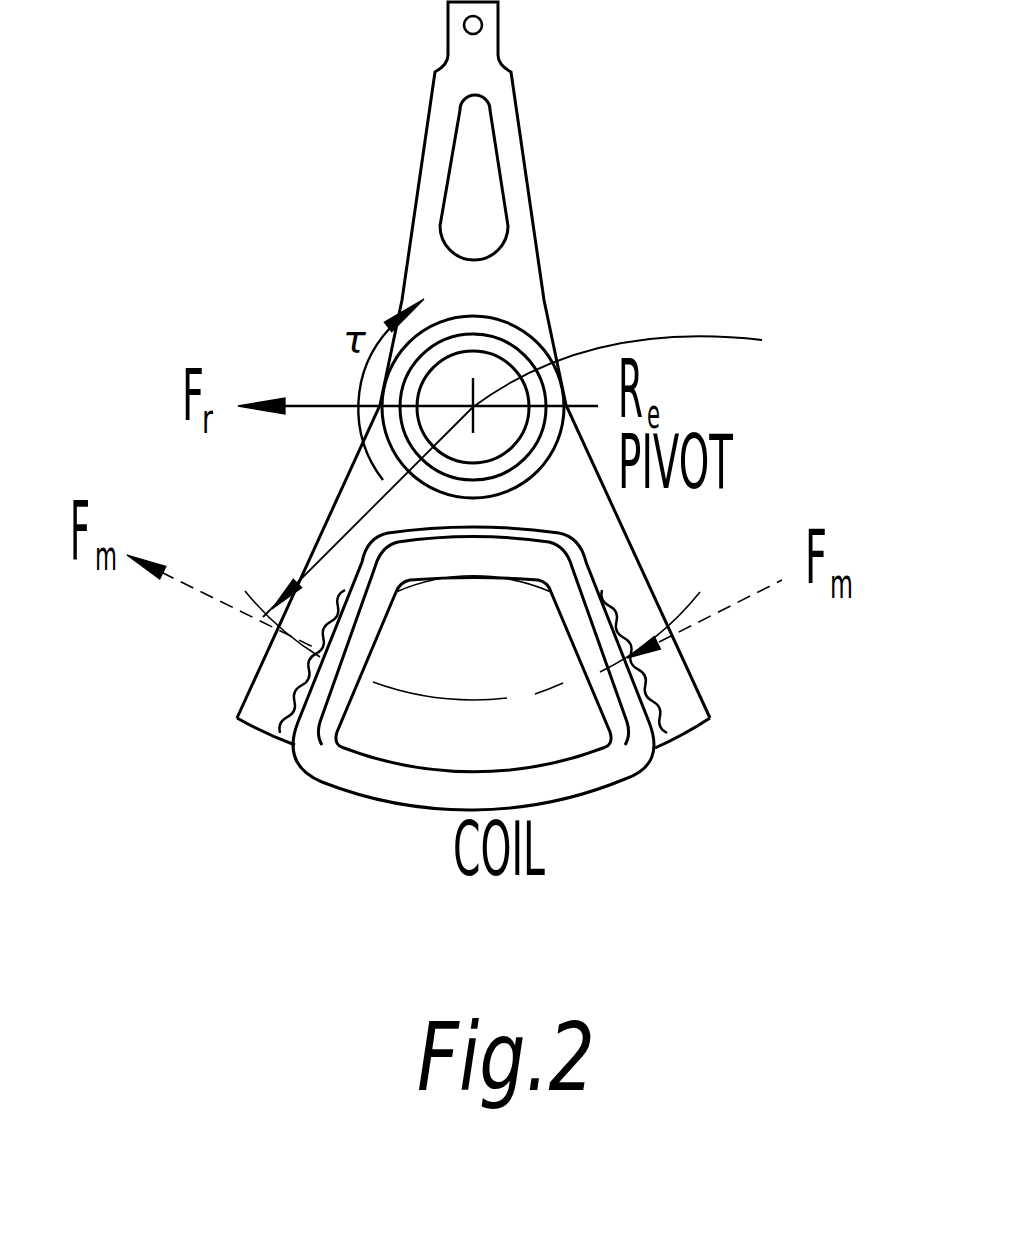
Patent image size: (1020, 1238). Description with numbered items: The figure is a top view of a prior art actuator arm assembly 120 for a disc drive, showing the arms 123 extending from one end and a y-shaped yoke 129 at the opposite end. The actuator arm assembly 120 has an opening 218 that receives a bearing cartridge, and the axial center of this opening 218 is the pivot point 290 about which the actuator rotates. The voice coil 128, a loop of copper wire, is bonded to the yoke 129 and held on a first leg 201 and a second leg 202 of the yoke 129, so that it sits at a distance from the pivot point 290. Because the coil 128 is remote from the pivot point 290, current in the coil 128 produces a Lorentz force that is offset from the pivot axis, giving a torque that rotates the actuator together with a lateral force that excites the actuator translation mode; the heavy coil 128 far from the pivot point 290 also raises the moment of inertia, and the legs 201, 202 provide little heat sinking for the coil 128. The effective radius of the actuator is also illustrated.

The actuator arm assembly 120 is at (625, 555).
The arms 123 is at (511, 188).
The opening 218 is at (519, 336).
The pivot point 290 is at (652, 363).
The voice coil 128 is at (395, 795).
The yoke 129 is at (252, 677).
The first leg 201 is at (265, 717).
The second leg 202 is at (690, 722).